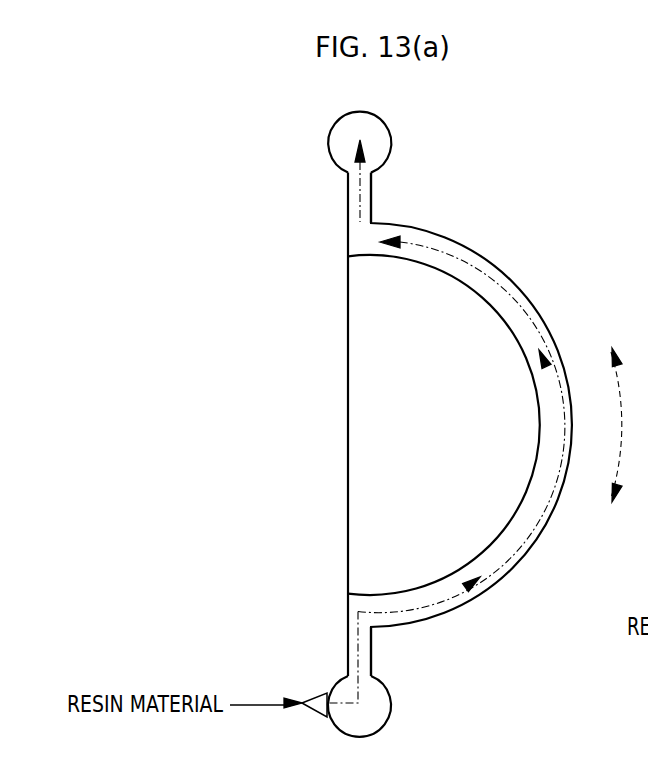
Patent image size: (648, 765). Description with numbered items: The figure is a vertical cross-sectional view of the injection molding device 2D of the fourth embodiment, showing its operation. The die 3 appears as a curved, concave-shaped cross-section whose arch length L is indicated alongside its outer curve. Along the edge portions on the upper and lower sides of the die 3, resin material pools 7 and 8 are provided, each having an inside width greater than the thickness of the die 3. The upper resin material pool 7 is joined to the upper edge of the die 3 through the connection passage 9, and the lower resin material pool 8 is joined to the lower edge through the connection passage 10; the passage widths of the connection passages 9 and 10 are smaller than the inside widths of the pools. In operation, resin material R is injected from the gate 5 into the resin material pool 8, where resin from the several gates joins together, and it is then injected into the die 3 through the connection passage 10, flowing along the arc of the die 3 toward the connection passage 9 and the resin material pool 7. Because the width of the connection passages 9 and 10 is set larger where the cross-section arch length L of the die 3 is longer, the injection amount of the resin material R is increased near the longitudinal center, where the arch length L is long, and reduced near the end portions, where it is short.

The injection molding device 2D is at (243, 158).
The die 3 is at (512, 280).
The gate 5 is at (318, 697).
The resin material pool 7 is at (392, 147).
The resin material pool 8 is at (392, 705).
The connection passage 9 is at (372, 202).
The connection passage 10 is at (373, 655).
The arch length L is at (624, 425).
The resin material R is at (550, 473).